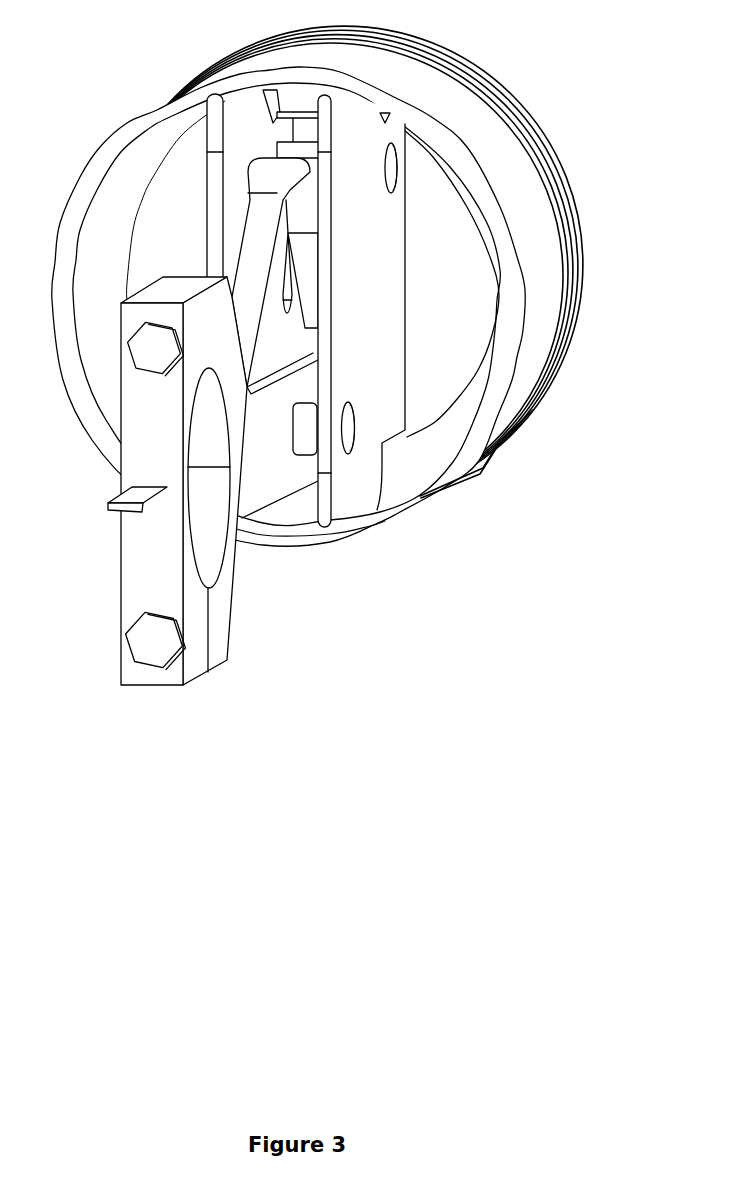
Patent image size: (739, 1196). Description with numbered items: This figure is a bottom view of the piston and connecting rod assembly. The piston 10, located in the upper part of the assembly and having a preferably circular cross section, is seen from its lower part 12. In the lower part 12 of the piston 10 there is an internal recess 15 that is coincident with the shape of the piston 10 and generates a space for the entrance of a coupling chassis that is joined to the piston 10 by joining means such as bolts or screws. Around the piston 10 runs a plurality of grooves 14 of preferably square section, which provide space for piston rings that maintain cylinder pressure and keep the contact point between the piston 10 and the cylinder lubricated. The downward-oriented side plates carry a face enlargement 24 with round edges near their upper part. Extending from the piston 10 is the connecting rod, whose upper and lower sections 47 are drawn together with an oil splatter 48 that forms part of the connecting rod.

The piston 10 is at (335, 303).
The lower part 12 is at (307, 545).
The grooves 14 is at (577, 317).
The internal recess 15 is at (116, 200).
The face enlargement 24 is at (346, 500).
The connecting rod section 47 is at (128, 475).
The oil splatter 48 is at (110, 507).